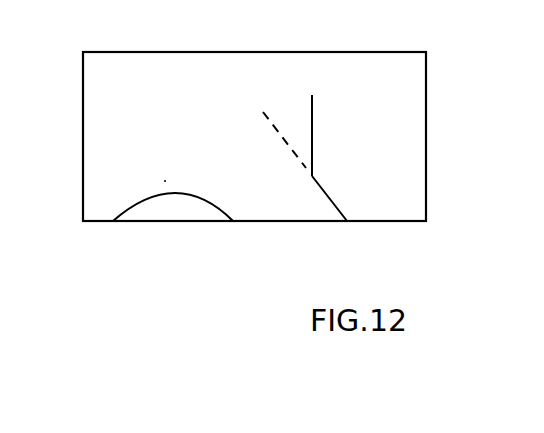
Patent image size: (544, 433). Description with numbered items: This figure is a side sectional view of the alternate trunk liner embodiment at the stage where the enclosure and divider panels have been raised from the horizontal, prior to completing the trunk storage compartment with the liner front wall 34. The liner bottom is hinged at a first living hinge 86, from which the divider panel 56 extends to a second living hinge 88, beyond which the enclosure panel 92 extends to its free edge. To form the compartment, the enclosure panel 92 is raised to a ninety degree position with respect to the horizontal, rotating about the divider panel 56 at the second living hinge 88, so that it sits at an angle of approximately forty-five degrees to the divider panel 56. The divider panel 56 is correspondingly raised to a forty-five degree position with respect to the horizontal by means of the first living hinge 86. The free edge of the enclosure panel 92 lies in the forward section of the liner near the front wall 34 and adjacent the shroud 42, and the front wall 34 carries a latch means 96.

The liner front wall 34 is at (428, 98).
The latch means 96 is at (417, 147).
The enclosure panel 92 is at (312, 115).
The divider panel 56 is at (329, 196).
The second living hinge 88 is at (310, 177).
The living hinge 86 is at (344, 230).
The shroud 42 is at (165, 203).